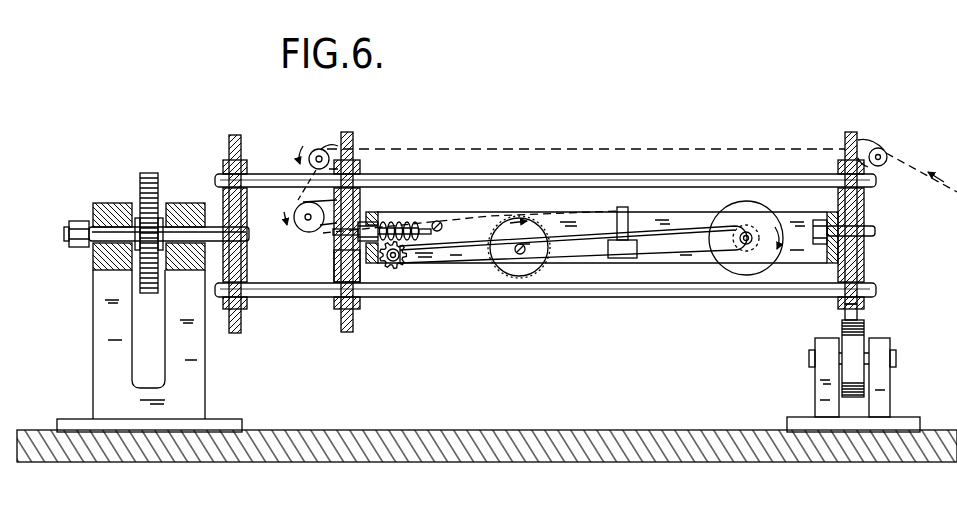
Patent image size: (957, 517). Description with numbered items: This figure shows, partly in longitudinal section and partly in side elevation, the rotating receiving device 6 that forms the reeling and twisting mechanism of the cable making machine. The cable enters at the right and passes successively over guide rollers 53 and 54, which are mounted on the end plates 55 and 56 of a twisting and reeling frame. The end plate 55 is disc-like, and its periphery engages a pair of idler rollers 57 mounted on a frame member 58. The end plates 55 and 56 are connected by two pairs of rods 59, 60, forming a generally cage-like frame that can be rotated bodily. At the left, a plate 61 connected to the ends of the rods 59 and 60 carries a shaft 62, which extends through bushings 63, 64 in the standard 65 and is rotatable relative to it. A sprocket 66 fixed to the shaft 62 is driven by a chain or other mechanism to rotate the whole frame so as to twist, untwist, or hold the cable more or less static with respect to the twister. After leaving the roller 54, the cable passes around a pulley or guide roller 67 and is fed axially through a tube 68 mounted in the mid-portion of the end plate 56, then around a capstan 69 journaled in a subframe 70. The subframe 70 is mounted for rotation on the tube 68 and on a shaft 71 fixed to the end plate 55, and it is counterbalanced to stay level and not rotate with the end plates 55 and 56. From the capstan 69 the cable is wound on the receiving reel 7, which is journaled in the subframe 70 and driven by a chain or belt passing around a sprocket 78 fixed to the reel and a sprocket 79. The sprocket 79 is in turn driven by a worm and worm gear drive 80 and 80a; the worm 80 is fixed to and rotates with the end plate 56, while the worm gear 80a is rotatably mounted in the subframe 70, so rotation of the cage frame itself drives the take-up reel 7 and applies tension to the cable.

The rotating receiving device 6 is at (640, 121).
The receiving reel 7 is at (766, 216).
The guide roller 53 is at (883, 164).
The guide roller 54 is at (318, 148).
The end plate 55 is at (851, 131).
The end plate 56 is at (350, 132).
The idler rollers 57 is at (855, 343).
The frame member 58 is at (822, 390).
The rods 59 is at (557, 173).
The rods 60 is at (600, 298).
The plate 61 is at (232, 152).
The shaft 62 is at (103, 233).
The bushing 63 is at (105, 222).
The bushing 64 is at (183, 222).
The standard 65 is at (200, 372).
The sprocket 66 is at (149, 176).
The pulley or guide roller 67 is at (303, 233).
The tube 68 is at (338, 249).
The capstan 69 is at (522, 278).
The subframe 70 is at (808, 257).
The shaft 71 is at (861, 238).
The sprocket 78 is at (745, 260).
The sprocket 79 is at (406, 268).
The worm 80 is at (393, 226).
The worm gear 80a is at (392, 263).